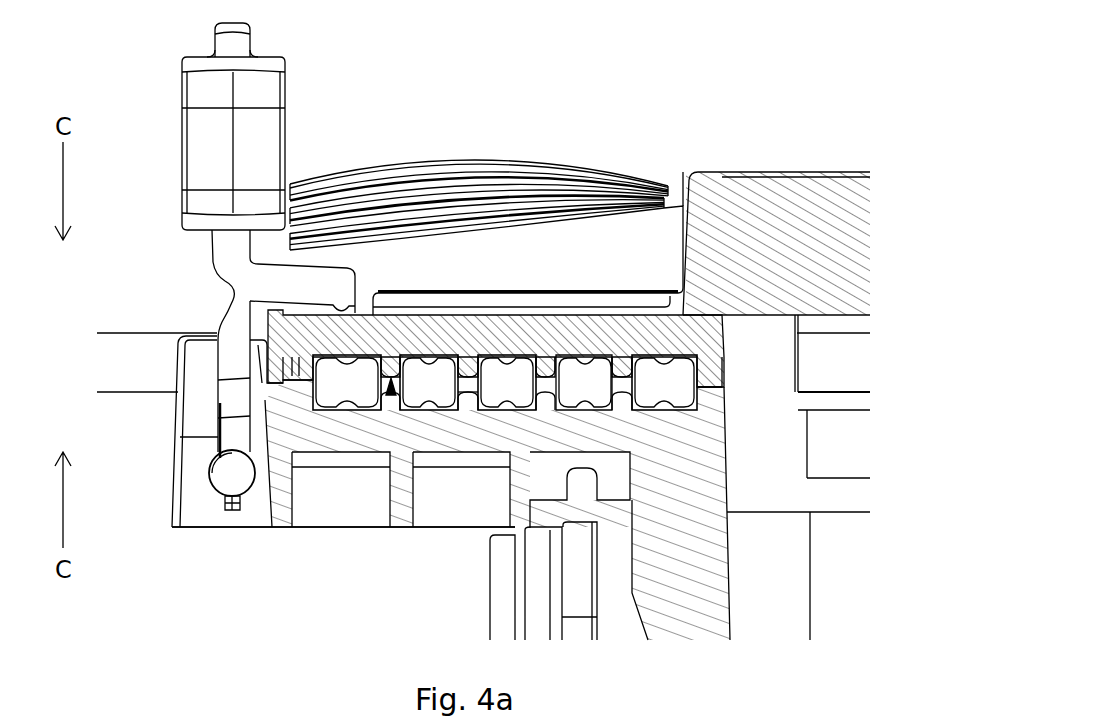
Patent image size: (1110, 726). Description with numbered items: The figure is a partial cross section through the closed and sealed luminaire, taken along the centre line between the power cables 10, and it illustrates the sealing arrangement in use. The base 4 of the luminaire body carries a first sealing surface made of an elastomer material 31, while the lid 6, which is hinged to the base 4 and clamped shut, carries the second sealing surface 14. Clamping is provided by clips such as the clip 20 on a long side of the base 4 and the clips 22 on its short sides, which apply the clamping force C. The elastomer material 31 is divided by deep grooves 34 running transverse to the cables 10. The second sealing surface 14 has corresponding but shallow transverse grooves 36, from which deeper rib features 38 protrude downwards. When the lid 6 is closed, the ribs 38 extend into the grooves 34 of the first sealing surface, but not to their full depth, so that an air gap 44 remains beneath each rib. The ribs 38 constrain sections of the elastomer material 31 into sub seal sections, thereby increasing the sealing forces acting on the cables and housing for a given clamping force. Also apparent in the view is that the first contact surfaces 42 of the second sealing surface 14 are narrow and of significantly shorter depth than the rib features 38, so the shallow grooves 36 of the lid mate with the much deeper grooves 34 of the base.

The base 4 is at (312, 528).
The lid 6 is at (776, 172).
The power cables 10 is at (138, 352).
The second sealing surface 14 is at (566, 355).
The clip 20 is at (432, 165).
The clips 22 is at (252, 33).
The elastomer material 31 is at (362, 397).
The grooves 34 is at (386, 395).
The transverse grooves 36 is at (600, 355).
The ribs 38 is at (462, 365).
The first contact surfaces 42 is at (697, 393).
The air gap 44 is at (470, 378).